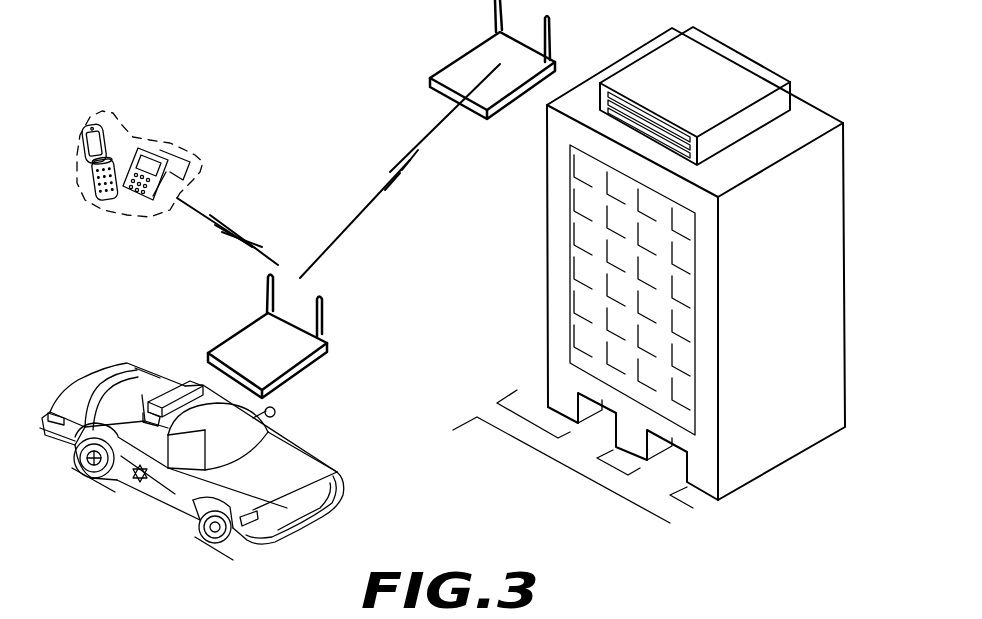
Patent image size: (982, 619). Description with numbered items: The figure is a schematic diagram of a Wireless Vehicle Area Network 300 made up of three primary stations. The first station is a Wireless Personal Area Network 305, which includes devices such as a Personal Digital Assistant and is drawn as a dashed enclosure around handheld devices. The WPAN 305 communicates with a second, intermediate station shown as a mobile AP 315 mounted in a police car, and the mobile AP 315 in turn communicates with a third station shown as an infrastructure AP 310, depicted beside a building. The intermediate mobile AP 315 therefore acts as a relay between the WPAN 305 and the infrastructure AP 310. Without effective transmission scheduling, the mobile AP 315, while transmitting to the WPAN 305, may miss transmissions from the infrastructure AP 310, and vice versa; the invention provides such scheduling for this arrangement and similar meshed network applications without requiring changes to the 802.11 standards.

The Wireless Vehicle Area Network (WVAN) 300 is at (242, 70).
The Wireless Personal Area Network (WPAN) 305 is at (136, 130).
The infrastructure AP 310 is at (452, 60).
The mobile AP 315 is at (243, 327).